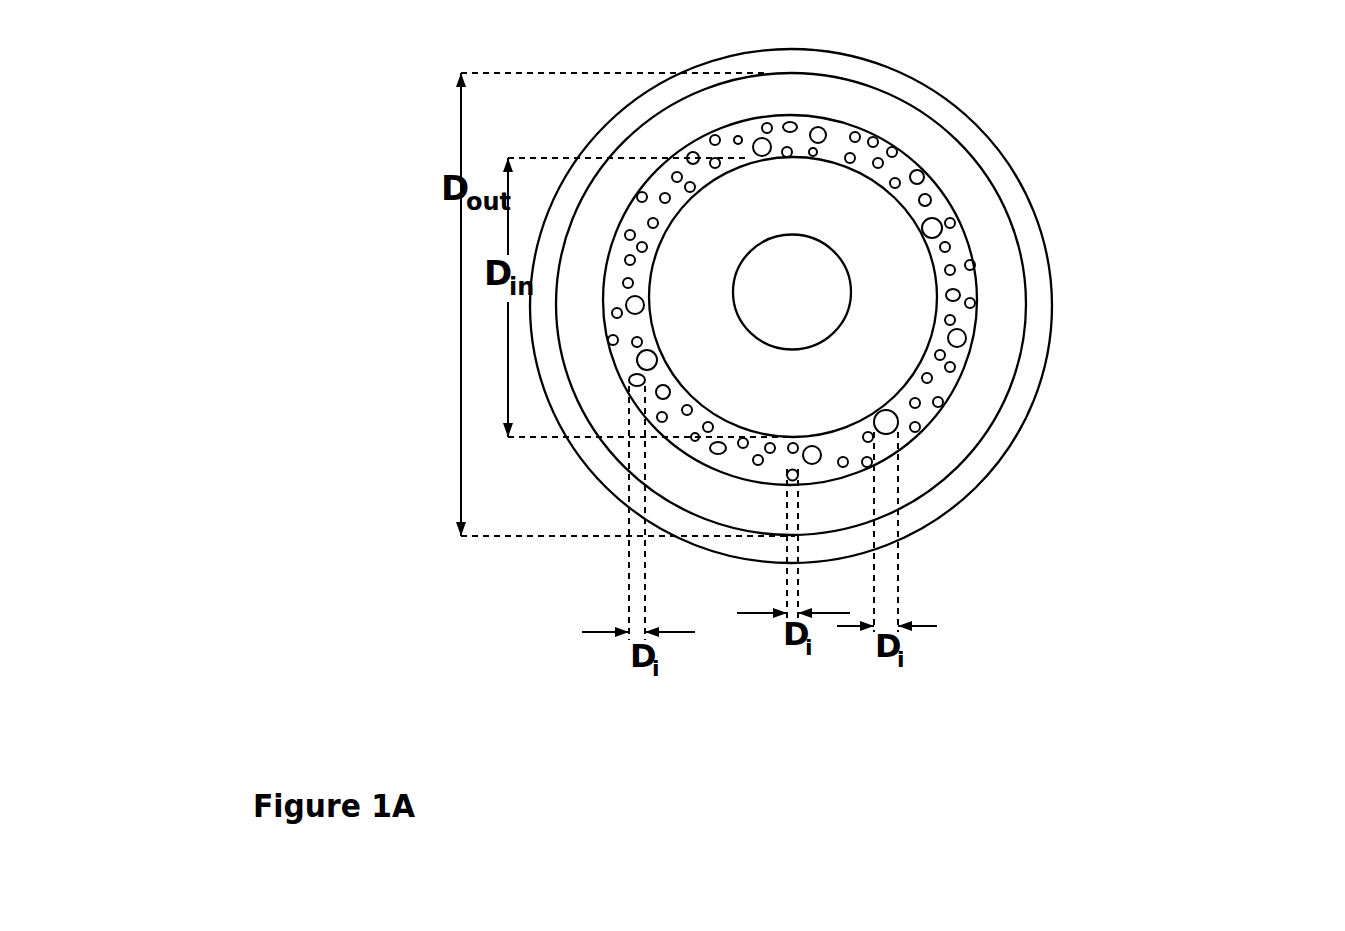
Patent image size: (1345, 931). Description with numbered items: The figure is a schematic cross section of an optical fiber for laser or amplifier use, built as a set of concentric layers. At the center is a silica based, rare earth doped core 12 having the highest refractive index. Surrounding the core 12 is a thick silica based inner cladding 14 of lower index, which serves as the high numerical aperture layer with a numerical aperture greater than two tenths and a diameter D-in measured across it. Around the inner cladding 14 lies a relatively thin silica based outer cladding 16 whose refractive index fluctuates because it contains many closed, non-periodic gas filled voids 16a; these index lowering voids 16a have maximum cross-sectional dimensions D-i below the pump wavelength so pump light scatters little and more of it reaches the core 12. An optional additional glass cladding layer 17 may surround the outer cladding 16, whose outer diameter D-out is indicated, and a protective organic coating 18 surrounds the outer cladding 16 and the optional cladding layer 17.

The core 12 is at (813, 301).
The inner cladding 14 is at (862, 362).
The outer cladding 16 is at (930, 413).
The voids 16a is at (920, 173).
The optional cladding layer 17 is at (927, 463).
The protective coating 18 is at (923, 512).